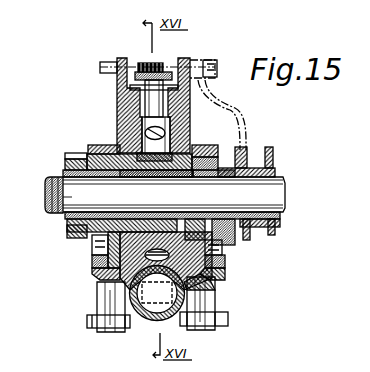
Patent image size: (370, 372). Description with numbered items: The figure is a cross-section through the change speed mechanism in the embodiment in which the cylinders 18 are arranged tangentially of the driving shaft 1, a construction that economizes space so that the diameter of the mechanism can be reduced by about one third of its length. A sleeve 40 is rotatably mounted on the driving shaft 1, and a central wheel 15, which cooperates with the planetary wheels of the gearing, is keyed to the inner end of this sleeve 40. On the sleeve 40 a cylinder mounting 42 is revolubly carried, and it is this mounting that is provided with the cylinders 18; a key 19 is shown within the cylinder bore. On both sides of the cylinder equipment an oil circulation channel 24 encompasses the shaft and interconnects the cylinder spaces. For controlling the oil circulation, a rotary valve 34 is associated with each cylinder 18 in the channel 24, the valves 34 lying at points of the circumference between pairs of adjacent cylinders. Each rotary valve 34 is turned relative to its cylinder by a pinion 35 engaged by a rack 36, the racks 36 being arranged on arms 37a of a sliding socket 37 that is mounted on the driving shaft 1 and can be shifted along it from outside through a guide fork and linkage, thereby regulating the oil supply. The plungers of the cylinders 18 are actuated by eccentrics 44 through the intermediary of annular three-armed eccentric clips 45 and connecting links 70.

The driving shaft 1 is at (270, 189).
The central wheel 15 is at (72, 153).
The cylinder 18 is at (146, 322).
The key 19 is at (163, 305).
The oil circulation channel 24 is at (210, 284).
The rotary valve 34 is at (146, 130).
The pinion 35 is at (148, 62).
The rack 36 is at (100, 67).
The sliding socket 37 is at (270, 160).
The arm 37a is at (241, 112).
The sleeve 40 is at (166, 178).
The cylinder mounting 42 is at (80, 195).
The eccentric 44 is at (92, 258).
The eccentric clip 45 is at (95, 275).
The connecting link 70 is at (118, 332).